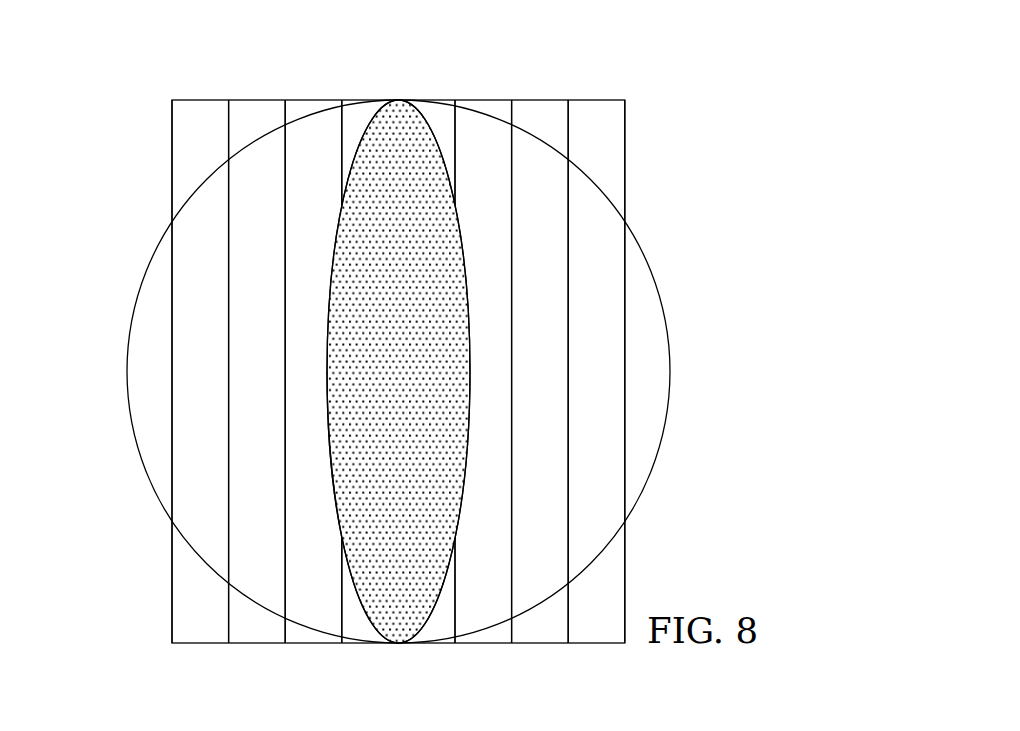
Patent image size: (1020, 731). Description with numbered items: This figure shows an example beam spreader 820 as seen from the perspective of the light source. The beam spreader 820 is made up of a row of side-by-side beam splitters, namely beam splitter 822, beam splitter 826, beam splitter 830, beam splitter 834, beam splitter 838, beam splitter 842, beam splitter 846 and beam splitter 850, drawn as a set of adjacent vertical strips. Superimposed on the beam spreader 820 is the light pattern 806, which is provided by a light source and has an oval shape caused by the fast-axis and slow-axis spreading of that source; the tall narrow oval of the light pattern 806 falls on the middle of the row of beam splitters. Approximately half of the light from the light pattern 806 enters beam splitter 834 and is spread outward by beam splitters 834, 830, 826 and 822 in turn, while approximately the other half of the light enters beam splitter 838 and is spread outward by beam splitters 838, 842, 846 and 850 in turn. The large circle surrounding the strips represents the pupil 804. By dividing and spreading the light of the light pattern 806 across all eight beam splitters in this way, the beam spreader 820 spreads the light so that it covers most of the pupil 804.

The pupil 804 is at (118, 373).
The light pattern 806 is at (333, 510).
The beam spreader 820 is at (630, 38).
The beam splitter 822 is at (200, 110).
The beam splitter 826 is at (257, 110).
The beam splitter 830 is at (314, 110).
The beam splitter 834 is at (370, 110).
The beam splitter 838 is at (428, 110).
The beam splitter 842 is at (485, 110).
The beam splitter 846 is at (542, 110).
The beam splitter 850 is at (597, 110).